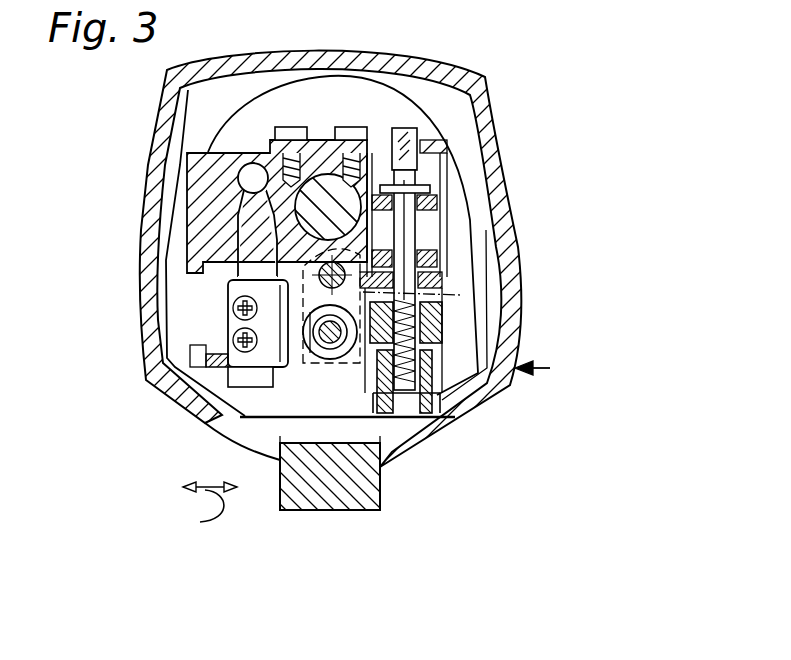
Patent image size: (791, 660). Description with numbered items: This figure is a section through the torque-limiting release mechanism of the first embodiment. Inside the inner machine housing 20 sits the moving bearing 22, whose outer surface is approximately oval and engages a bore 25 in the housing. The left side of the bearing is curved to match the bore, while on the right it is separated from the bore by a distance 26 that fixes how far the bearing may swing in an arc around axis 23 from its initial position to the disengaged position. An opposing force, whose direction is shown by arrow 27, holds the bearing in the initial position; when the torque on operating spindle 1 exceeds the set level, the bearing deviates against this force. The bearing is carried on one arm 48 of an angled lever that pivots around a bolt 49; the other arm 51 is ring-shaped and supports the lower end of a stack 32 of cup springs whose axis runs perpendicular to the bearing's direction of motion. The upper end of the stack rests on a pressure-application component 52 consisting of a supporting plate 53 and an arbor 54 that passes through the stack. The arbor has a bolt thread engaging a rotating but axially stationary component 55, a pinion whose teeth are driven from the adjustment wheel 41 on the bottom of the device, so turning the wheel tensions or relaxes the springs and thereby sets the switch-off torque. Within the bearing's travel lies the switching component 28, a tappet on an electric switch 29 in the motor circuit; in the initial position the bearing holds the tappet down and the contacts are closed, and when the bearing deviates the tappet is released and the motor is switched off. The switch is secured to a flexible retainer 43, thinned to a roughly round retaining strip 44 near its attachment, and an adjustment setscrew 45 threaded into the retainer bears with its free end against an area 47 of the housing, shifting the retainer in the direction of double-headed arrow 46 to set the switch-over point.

The operating spindle 1 is at (322, 185).
The inner machine housing 20 is at (280, 237).
The moving bearing 22 is at (313, 350).
The pivot axis 23 is at (460, 295).
The bore 25 is at (350, 410).
The distance 26 is at (350, 333).
The opposing force arrow 27 is at (553, 366).
The switching component 28 is at (300, 380).
The electric switch 29 is at (267, 327).
The stack of cup springs 32 is at (460, 227).
The adjustment wheel 41 is at (367, 485).
The flexible retainer 43 is at (257, 205).
The retaining strip 44 is at (247, 177).
The adjustment setscrew 45 is at (150, 383).
The double-headed arrow 46 is at (203, 506).
The housing abutment area 47 is at (245, 422).
The bearing lever arm 48 is at (360, 319).
The bolt 49 is at (345, 273).
The ring-shaped lever arm 51 is at (437, 277).
The pressure-application component 52 is at (450, 150).
The supporting plate 53 is at (455, 170).
The arbor 54 is at (455, 195).
The rotating component 55 is at (440, 405).